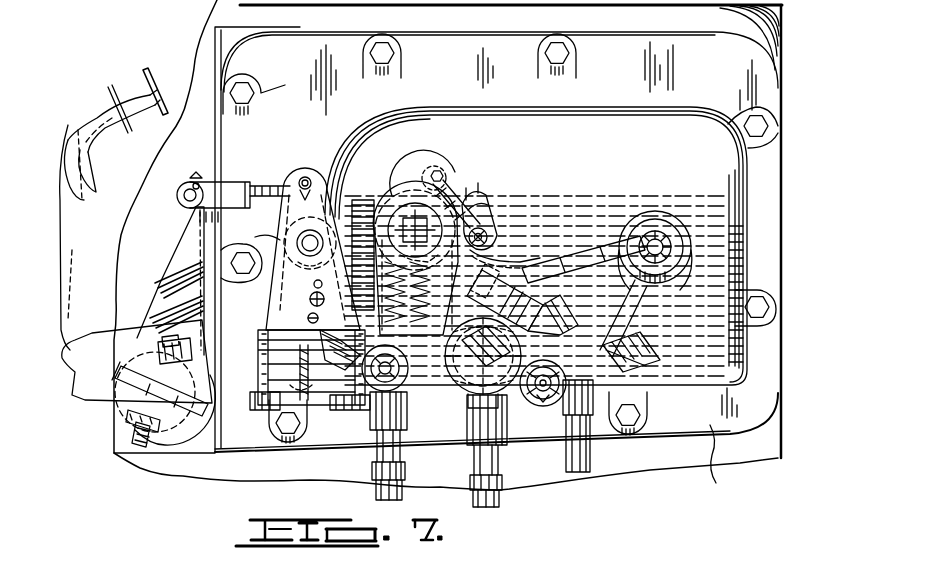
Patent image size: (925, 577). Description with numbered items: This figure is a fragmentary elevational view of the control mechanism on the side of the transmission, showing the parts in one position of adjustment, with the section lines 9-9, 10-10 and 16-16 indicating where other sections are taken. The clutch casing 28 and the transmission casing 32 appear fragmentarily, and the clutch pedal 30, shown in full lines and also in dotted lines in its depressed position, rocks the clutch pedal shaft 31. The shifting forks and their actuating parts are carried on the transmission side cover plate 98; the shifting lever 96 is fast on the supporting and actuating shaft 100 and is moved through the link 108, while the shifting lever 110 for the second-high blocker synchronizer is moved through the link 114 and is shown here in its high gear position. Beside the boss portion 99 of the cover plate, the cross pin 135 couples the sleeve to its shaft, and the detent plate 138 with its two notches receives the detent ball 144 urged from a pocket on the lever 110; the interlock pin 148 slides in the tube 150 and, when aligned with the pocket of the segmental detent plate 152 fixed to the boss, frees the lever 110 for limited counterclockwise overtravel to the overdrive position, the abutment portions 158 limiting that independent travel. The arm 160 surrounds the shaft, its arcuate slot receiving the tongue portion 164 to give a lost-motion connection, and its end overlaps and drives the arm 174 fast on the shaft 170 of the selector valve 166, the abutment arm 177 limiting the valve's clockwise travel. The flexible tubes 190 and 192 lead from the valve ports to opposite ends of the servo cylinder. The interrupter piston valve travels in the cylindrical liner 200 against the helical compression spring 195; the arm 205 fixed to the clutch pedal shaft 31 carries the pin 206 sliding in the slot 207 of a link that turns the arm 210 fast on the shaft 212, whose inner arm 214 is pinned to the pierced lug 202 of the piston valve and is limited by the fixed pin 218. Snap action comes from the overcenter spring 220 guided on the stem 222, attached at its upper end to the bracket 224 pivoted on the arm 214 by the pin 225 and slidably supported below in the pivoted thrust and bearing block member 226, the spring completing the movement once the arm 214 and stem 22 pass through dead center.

The section line 9- 9 is at (420, 137).
The section line 10- 10 is at (447, 132).
The section line 16- 16 is at (222, 300).
The stem 22 is at (323, 158).
The clutch casing 28 is at (195, 82).
The clutch pedal 30 is at (419, 245).
The clutch pedal shaft 31 is at (139, 387).
The transmission casing 32 is at (768, 42).
The shifting lever 96 is at (600, 263).
The transmission side cover plate 98 is at (650, 438).
The boss portion 99 is at (488, 229).
The supporting and actuating shaft 100 is at (672, 256).
The link 108 is at (580, 322).
The shifting lever 110 is at (500, 194).
The link 114 is at (304, 372).
The cross pin 135 is at (396, 232).
The detent plate 138 is at (445, 168).
The detent ball 144 is at (366, 255).
The interlock pin 148 is at (448, 174).
The tube 150 is at (470, 180).
The segmental detent plate 152 is at (505, 206).
The abutment portions 158 is at (452, 322).
The arm 160 is at (495, 247).
The tongue portion 164 is at (396, 208).
The selector valve 166 is at (458, 390).
The shaft 170 is at (530, 408).
The arm 174 is at (500, 300).
The abutment arm 177 is at (536, 402).
The flexible tube 190 is at (655, 340).
The flexible tube 192 is at (502, 492).
The helical compression spring 195 is at (462, 400).
The cylindrical liner 200 is at (372, 482).
The pierced lug 202 is at (345, 402).
The arm 205 is at (183, 242).
The pin 206 is at (180, 192).
The slot 207 is at (177, 198).
The arm 210 is at (302, 185).
The shaft 212 is at (303, 240).
The arm 214 is at (282, 240).
The fixed pin 218 is at (312, 286).
The overcenter spring 220 is at (310, 338).
The stem 222 is at (312, 354).
The bracket 224 is at (308, 320).
The pin 225 is at (309, 302).
The thrust and bearing block member 226 is at (296, 402).